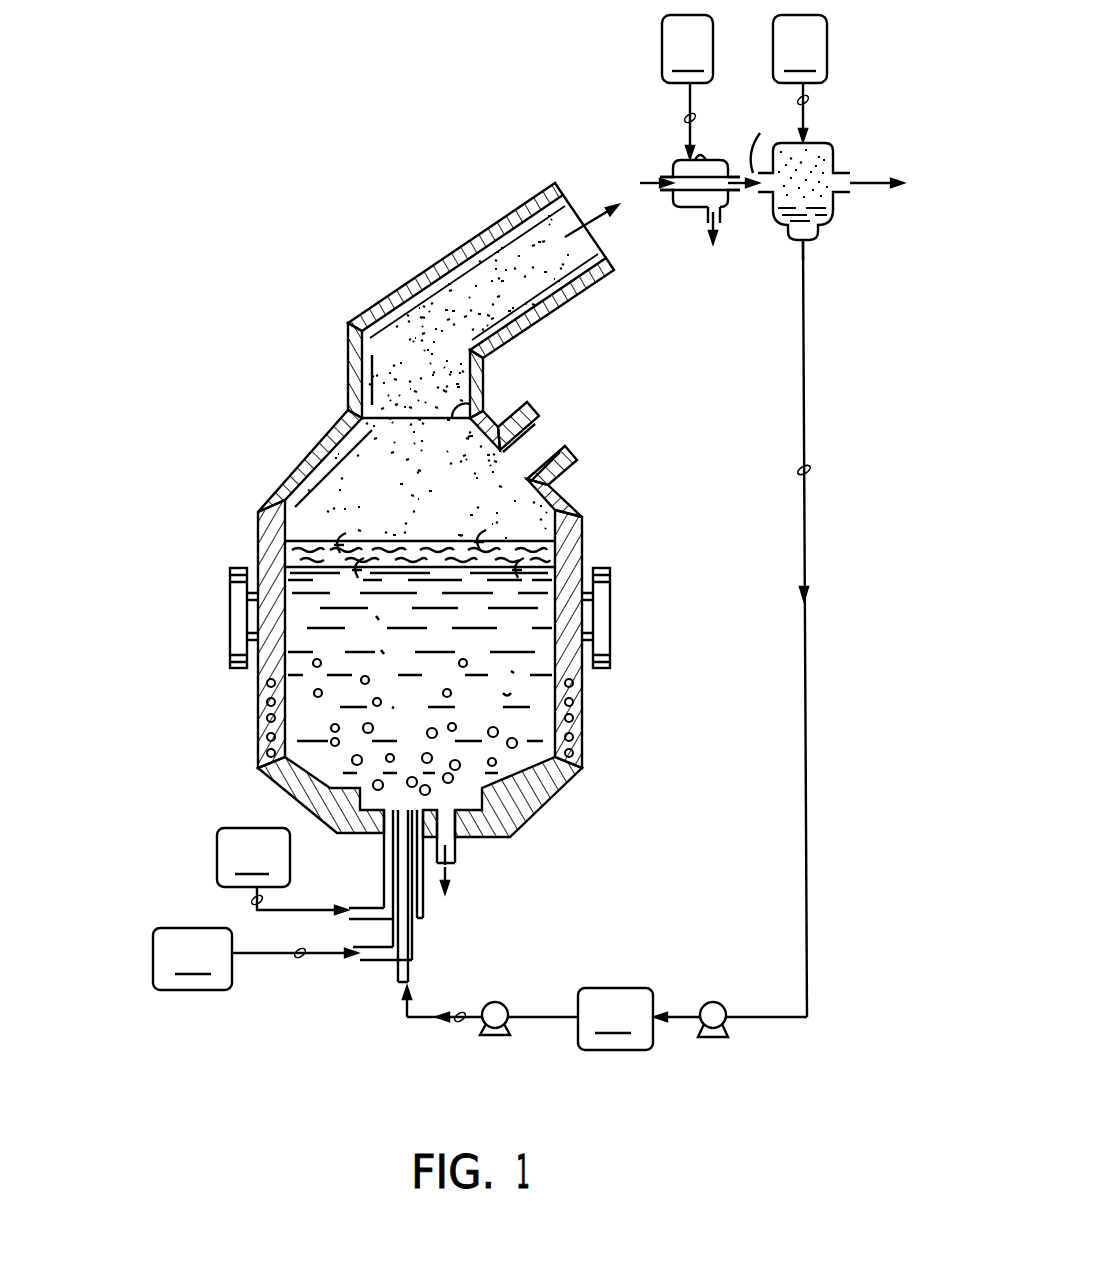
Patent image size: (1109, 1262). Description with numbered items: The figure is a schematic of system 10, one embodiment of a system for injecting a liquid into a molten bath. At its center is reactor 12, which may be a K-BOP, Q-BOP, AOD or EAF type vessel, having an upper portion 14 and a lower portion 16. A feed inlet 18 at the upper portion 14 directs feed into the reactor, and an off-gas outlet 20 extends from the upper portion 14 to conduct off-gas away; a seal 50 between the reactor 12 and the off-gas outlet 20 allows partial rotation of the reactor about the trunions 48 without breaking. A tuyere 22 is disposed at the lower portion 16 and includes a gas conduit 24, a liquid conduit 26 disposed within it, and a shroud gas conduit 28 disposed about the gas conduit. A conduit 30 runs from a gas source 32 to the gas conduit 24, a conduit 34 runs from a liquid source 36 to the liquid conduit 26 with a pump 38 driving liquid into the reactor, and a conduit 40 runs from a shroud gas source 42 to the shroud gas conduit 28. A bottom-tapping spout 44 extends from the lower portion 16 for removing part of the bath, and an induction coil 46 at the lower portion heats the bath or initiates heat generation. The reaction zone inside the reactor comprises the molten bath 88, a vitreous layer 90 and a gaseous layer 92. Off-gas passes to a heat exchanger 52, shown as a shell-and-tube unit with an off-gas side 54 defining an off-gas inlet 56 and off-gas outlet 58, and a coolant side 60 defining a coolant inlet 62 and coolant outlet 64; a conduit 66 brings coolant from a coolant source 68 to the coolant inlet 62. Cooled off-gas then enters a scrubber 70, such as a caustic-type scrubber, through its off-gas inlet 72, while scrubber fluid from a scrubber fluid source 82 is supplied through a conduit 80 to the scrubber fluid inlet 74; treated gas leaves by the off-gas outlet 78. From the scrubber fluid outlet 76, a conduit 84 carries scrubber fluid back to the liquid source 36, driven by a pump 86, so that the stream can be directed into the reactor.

The system 10 is at (318, 248).
The reactor 12 is at (585, 527).
The upper portion 14 is at (280, 485).
The lower portion 16 is at (497, 822).
The feed inlet 18 is at (578, 472).
The off-gas outlet 20 is at (478, 236).
The tuyere 22 is at (372, 857).
The gas conduit 24 is at (417, 957).
The liquid conduit 26 is at (400, 970).
The shroud gas conduit 28 is at (425, 912).
The conduit 30 is at (300, 960).
The gas source 32 is at (282, 959).
The conduit 34 is at (462, 1027).
The liquid source 36 is at (615, 1019).
The pump 38 is at (497, 1003).
The conduit 40 is at (250, 900).
The shroud gas source 42 is at (253, 857).
The bottom-tapping spout 44 is at (457, 851).
The induction coil 46 is at (582, 710).
The trunions 48 is at (230, 622).
The seal 50 is at (470, 405).
The heat exchanger 52 is at (666, 182).
The off-gas side 54 is at (692, 183).
The off-gas inlet 56 is at (658, 180).
The off-gas outlet 58 is at (718, 212).
The coolant side 60 is at (704, 165).
The coolant inlet 62 is at (680, 160).
The coolant outlet 64 is at (742, 241).
The conduit 66 is at (687, 118).
The coolant source 68 is at (687, 49).
The scrubber 70 is at (831, 182).
The off-gas inlet 72 is at (764, 135).
The scrubber fluid inlet 74 is at (810, 133).
The scrubber fluid outlet 76 is at (812, 257).
The off-gas outlet 78 is at (862, 178).
The conduit 80 is at (797, 100).
The scrubber fluid source 82 is at (800, 49).
The conduit 84 is at (810, 470).
The pump 86 is at (717, 1002).
The molten bath 88 is at (332, 717).
The vitreous layer 90 is at (285, 557).
The gaseous layer 92 is at (357, 490).